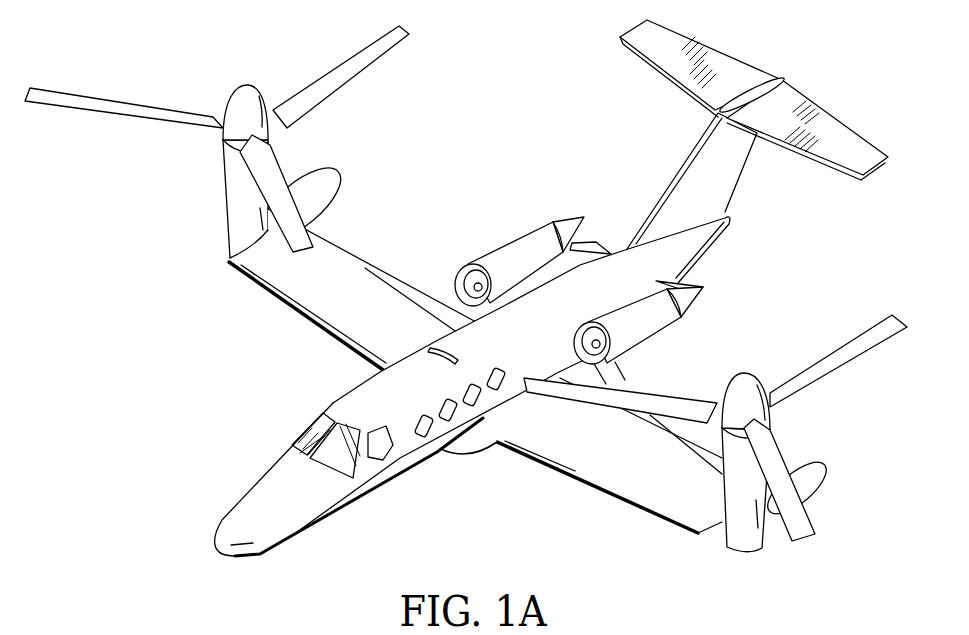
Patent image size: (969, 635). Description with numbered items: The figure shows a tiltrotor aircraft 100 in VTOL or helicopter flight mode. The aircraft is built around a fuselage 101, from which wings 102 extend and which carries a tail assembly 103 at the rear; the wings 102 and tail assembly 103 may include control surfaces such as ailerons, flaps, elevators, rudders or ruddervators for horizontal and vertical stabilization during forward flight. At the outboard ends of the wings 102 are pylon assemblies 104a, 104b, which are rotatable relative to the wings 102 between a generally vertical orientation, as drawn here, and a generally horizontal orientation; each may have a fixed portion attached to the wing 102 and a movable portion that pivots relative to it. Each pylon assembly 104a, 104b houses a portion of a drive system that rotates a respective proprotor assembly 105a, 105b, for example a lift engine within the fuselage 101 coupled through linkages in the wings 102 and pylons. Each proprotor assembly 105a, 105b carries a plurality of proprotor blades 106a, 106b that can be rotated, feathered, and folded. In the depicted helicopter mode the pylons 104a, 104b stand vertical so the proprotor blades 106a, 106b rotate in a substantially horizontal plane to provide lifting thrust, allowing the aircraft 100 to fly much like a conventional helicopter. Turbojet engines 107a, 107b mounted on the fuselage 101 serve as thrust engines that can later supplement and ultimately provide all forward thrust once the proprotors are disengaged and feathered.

The tiltrotor aircraft 100 is at (470, 286).
The fuselage 101 is at (308, 523).
The wings 102 is at (367, 268).
The tail assembly 103 is at (730, 66).
The pylon assembly 104a is at (222, 193).
The pylon assembly 104b is at (722, 490).
The proprotor assembly 105a is at (216, 85).
The proprotor assembly 105b is at (804, 419).
The proprotor blades 106a is at (323, 78).
The proprotor blades 106b is at (846, 342).
The turbojet engine 107a is at (523, 229).
The turbojet engine 107b is at (665, 319).